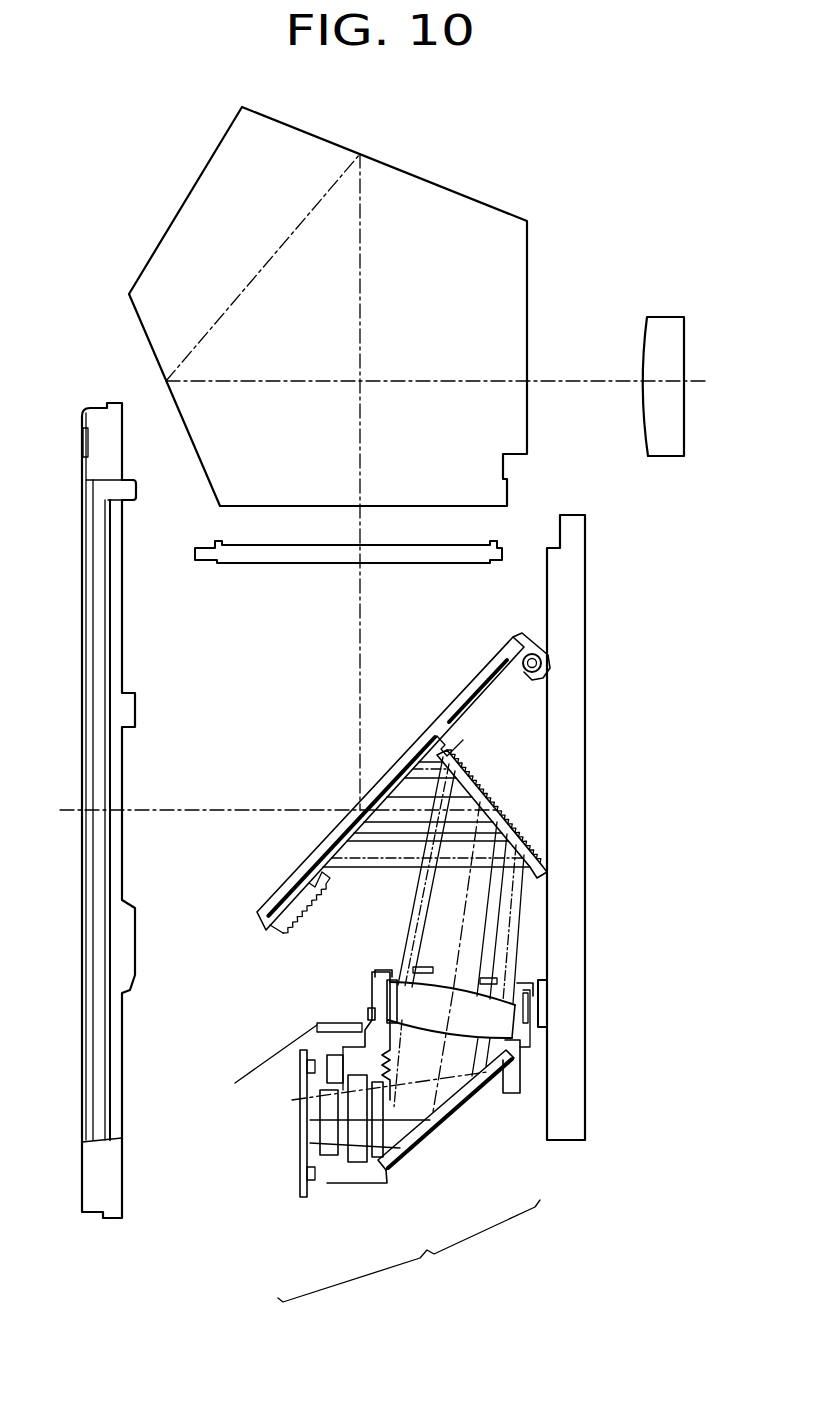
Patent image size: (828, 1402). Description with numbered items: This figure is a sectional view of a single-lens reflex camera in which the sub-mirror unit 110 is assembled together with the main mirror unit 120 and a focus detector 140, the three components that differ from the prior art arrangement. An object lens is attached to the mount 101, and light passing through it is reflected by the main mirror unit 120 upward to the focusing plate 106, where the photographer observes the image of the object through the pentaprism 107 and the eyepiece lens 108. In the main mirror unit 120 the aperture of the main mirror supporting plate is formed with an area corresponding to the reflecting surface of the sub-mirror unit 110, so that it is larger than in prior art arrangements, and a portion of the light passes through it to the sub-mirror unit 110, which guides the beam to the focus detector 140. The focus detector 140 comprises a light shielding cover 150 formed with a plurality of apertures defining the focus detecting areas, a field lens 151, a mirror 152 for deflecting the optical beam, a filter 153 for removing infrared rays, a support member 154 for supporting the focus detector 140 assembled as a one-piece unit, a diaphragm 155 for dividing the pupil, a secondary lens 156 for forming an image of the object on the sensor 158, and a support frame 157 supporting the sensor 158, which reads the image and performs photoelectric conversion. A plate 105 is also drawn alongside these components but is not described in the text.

The mount 101 is at (97, 1212).
The side plate 105 is at (580, 763).
The focusing plate 106 is at (458, 555).
The pentaprism 107 is at (518, 288).
The eyepiece lens 108 is at (668, 322).
The sub-mirror unit 110 is at (503, 784).
The main mirror unit 120 is at (477, 698).
The focus detector 140 is at (373, 1140).
The light shielding cover 150 is at (382, 968).
The field lens 151 is at (372, 982).
The mirror 152 is at (443, 1127).
The filter 153 is at (380, 1133).
The support member 154 is at (367, 1017).
The diaphragm 155 is at (372, 1183).
The secondary lens 156 is at (355, 1183).
The support frame 157 is at (333, 1183).
The sensor 158 is at (308, 1083).